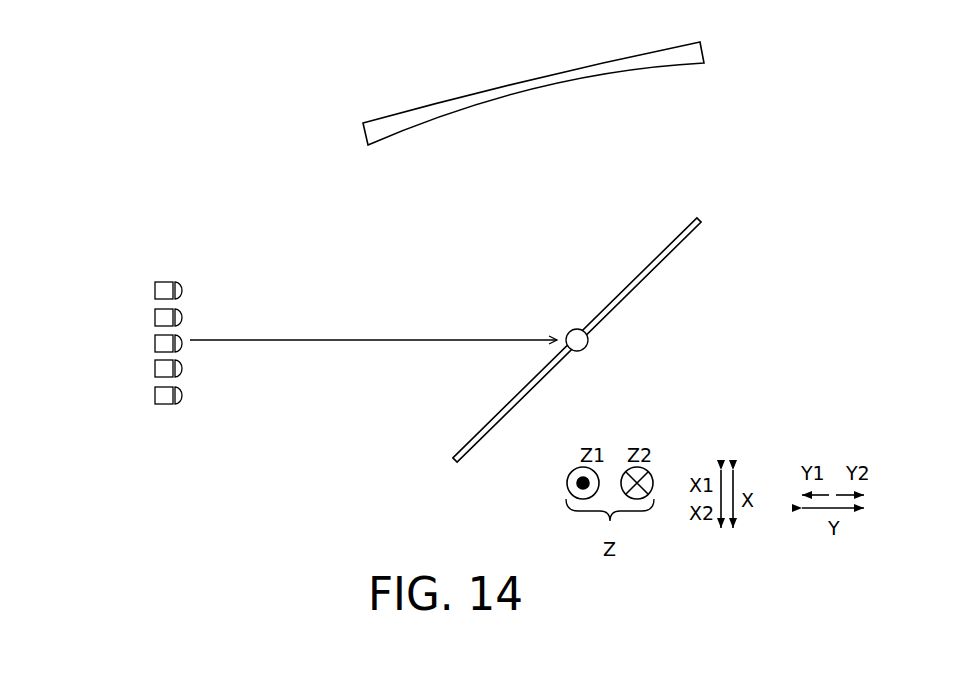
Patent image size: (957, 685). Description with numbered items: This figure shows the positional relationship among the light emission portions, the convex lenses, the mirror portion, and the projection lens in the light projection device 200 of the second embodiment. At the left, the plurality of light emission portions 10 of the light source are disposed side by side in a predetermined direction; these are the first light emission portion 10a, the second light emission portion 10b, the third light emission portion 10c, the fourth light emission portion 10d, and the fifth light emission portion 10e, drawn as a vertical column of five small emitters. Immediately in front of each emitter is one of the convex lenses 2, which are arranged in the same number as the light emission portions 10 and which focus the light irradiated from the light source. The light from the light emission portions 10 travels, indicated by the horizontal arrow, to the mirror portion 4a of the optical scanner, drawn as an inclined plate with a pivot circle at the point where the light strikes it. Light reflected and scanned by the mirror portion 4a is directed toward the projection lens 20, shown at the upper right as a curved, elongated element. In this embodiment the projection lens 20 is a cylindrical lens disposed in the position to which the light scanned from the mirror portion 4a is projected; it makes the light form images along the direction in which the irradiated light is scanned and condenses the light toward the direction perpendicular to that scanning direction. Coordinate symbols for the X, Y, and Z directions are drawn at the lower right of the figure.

The light projection device 200 is at (140, 151).
The light emission portions 10 is at (155, 267).
The first light emission portion 10a is at (145, 294).
The second light emission portion 10b is at (145, 320).
The third light emission portion 10c is at (145, 346).
The fourth light emission portion 10d is at (145, 372).
The fifth light emission portion 10e is at (145, 398).
The convex lenses 2 is at (198, 272).
The projection lens 20 is at (338, 131).
The mirror portion 4a is at (687, 257).